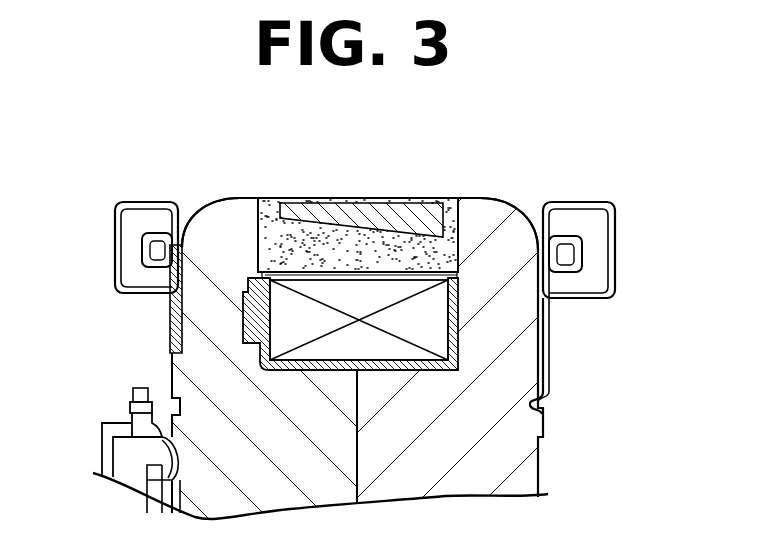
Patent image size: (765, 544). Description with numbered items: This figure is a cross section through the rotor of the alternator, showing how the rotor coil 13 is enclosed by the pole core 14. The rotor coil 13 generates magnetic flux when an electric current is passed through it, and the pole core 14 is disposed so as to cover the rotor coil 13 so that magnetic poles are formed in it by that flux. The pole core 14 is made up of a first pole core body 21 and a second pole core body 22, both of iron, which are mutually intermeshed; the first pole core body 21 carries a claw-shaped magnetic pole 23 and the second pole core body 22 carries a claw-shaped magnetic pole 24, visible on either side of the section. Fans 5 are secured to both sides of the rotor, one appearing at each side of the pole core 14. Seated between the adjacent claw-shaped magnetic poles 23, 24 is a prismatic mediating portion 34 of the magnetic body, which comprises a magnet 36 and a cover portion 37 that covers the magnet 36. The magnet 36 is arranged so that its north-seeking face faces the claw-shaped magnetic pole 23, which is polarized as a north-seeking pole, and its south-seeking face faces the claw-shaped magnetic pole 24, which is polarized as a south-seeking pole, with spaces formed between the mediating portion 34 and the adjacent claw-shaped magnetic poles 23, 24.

The fans 5 is at (123, 237).
The rotor coil 13 is at (282, 327).
The pole core 14 is at (523, 475).
The first pole core body 21 is at (522, 358).
The second pole core body 22 is at (200, 440).
The claw-shaped magnetic pole 23 is at (518, 223).
The claw-shaped magnetic pole 24 is at (200, 230).
The mediating portion 34 is at (280, 198).
The magnet 36 is at (369, 206).
The cover portion 37 is at (450, 200).